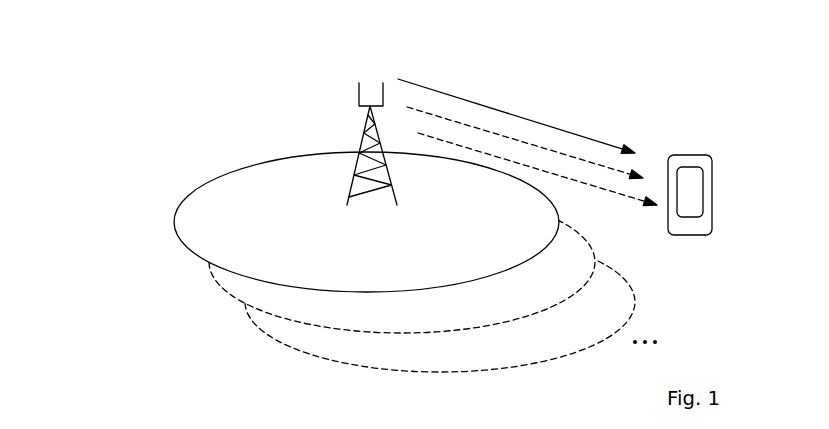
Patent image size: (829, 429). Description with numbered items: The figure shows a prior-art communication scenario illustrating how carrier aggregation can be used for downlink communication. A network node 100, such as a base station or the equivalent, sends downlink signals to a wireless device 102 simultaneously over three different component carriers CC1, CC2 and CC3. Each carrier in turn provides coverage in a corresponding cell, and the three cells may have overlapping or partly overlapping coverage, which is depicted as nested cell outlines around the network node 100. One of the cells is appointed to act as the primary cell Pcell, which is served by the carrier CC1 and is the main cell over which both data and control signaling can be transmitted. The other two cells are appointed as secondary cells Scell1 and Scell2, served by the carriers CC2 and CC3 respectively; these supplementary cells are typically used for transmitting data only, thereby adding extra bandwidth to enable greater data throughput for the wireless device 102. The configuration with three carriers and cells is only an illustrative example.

The network node 100 is at (362, 137).
The wireless device 102 is at (700, 154).
The component carrier CC1 is at (443, 92).
The component carrier CC2 is at (497, 133).
The component carrier CC3 is at (560, 175).
The primary cell Pcell is at (176, 235).
The secondary cell Scell1 is at (223, 288).
The secondary cell Scell2 is at (262, 328).